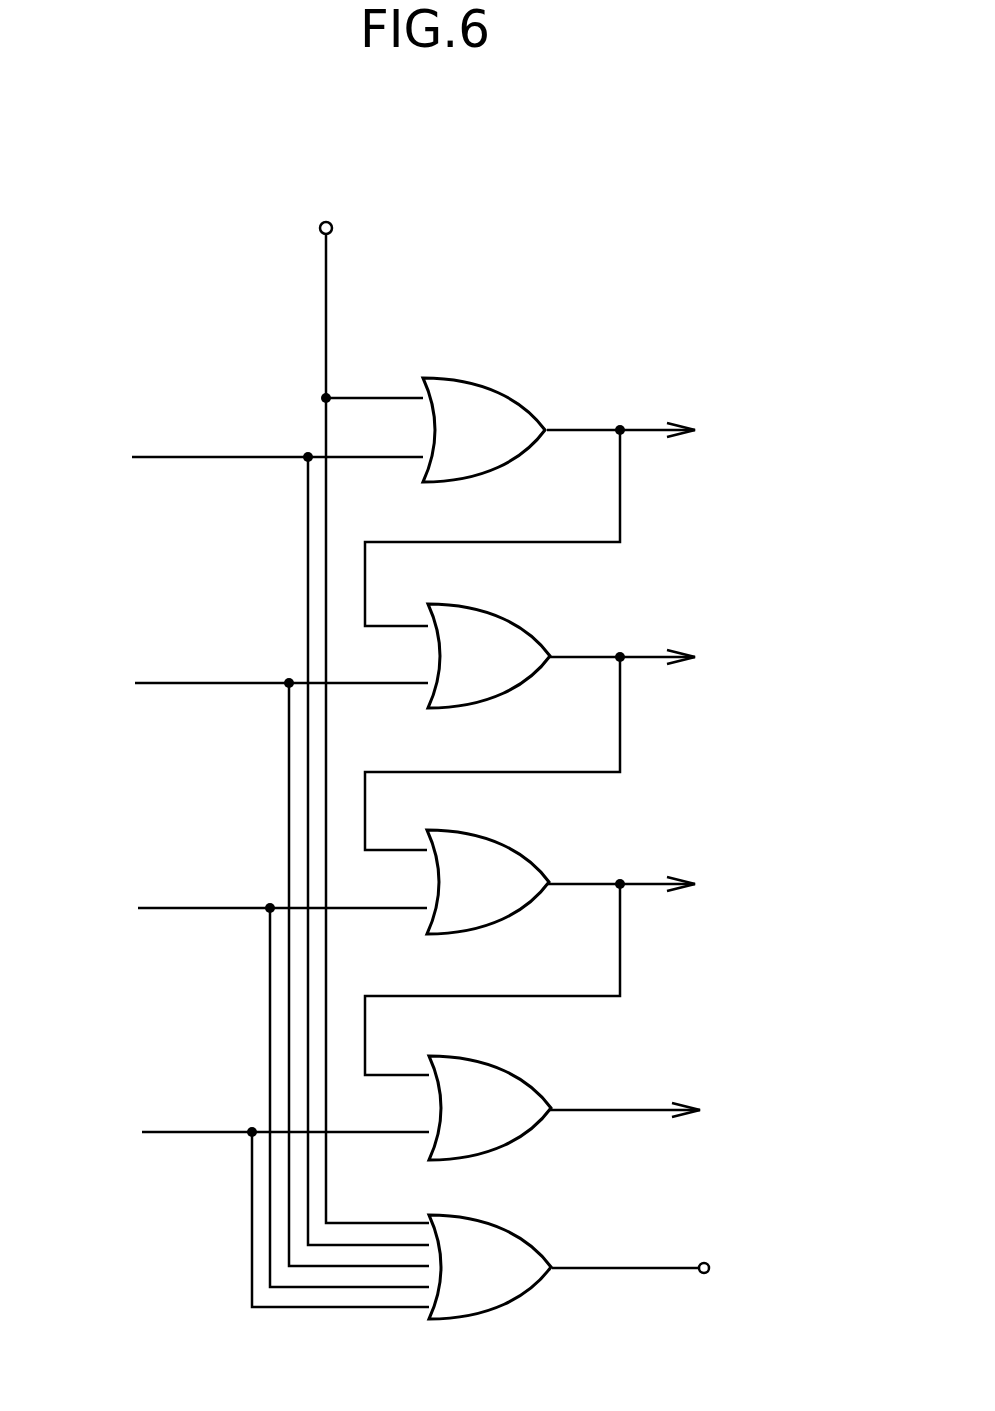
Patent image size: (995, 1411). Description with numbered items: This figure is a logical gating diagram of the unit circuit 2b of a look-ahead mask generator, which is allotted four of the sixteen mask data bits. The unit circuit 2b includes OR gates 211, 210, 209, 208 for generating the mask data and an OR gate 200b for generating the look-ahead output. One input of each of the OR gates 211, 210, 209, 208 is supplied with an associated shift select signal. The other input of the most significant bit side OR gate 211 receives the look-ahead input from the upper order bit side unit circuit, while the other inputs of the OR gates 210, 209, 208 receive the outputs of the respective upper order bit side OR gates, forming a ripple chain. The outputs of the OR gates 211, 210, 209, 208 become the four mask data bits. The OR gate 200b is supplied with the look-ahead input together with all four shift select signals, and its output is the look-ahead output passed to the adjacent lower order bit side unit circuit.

The unit circuit 2b is at (508, 240).
The most significant bit side OR gate 211 is at (519, 400).
The OR gate 210 is at (510, 616).
The OR gate 209 is at (513, 840).
The OR gate 208 is at (510, 1067).
The OR gate for look-ahead output generation 200b is at (510, 1223).